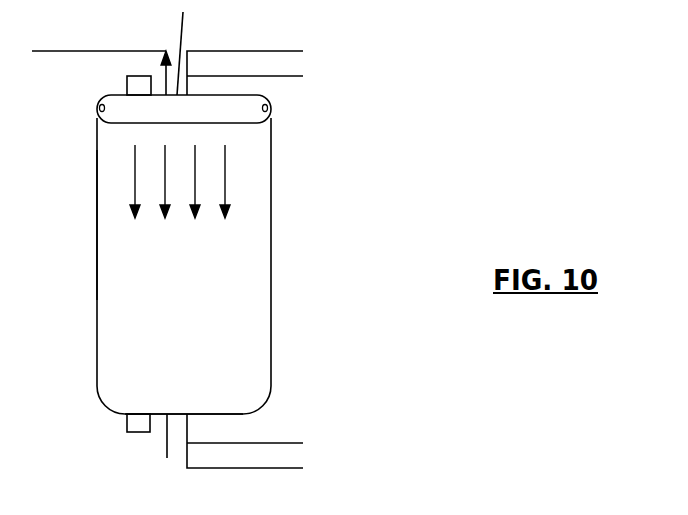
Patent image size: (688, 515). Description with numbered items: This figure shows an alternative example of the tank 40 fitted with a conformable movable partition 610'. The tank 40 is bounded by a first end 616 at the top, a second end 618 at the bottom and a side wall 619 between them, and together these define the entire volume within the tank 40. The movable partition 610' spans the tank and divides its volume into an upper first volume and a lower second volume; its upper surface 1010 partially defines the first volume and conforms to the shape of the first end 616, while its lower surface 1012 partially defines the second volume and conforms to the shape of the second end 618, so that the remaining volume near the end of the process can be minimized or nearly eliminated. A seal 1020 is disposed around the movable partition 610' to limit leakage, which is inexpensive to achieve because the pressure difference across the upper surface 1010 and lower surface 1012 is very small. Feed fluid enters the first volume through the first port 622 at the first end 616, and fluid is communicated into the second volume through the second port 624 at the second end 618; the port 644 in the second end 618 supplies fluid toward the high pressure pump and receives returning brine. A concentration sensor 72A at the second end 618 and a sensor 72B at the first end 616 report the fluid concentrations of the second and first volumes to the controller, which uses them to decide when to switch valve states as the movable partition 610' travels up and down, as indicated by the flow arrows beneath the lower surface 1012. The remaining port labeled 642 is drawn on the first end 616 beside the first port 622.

The tank 40 is at (97, 341).
The concentration sensor 72A is at (132, 432).
The sensor 72B is at (135, 76).
The conformable movable partition 610' is at (227, 101).
The first end 616 is at (186, 47).
The second end 618 is at (127, 415).
The side wall 619 is at (97, 206).
The first port 622 is at (163, 70).
The second port 624 is at (164, 445).
The first port 642 is at (190, 95).
The port 644 is at (188, 428).
The upper surface 1010 is at (213, 95).
The lower surface 1012 is at (245, 125).
The seal 1020 is at (268, 109).